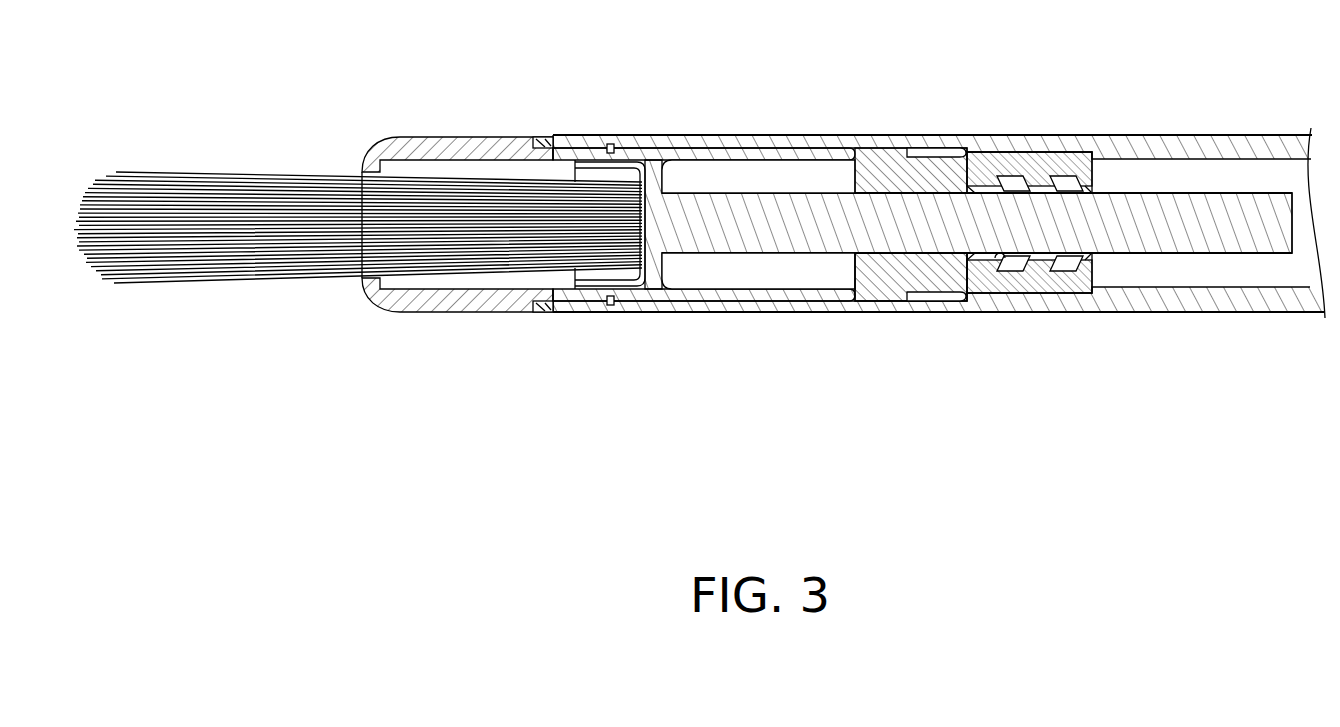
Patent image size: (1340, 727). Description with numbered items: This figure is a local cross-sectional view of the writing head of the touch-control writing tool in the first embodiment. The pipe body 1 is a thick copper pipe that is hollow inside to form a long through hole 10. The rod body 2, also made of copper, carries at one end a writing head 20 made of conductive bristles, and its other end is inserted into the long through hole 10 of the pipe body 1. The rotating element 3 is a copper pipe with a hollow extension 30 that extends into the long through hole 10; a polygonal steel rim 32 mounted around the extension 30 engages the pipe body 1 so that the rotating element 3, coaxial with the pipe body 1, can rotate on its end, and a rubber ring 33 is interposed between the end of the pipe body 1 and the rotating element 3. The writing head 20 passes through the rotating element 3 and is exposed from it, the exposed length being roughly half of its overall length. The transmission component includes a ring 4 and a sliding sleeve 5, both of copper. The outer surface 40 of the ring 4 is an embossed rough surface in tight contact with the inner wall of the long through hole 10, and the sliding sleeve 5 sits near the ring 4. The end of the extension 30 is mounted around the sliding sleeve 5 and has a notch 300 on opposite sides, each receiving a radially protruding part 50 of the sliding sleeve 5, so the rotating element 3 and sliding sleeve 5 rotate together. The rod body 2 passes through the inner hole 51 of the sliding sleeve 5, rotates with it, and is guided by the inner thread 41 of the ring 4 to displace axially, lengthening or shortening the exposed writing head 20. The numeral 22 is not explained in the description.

The pipe body 1 is at (1121, 295).
The rod body 2 is at (725, 266).
The rotating element 3 is at (440, 148).
The ring 4 is at (1052, 277).
The sliding sleeve 5 is at (927, 270).
The long through hole 10 is at (1232, 266).
The writing head 20 is at (205, 212).
The annular gap 22 is at (740, 194).
The extension 30 is at (565, 312).
The steel rim 32 is at (609, 144).
The rubber ring 33 is at (545, 312).
The outer surface of the ring 40 is at (1028, 152).
The inner thread 41 is at (1002, 262).
The protruding part 50 is at (877, 150).
The inner hole 51 is at (893, 248).
The notch 300 is at (943, 150).